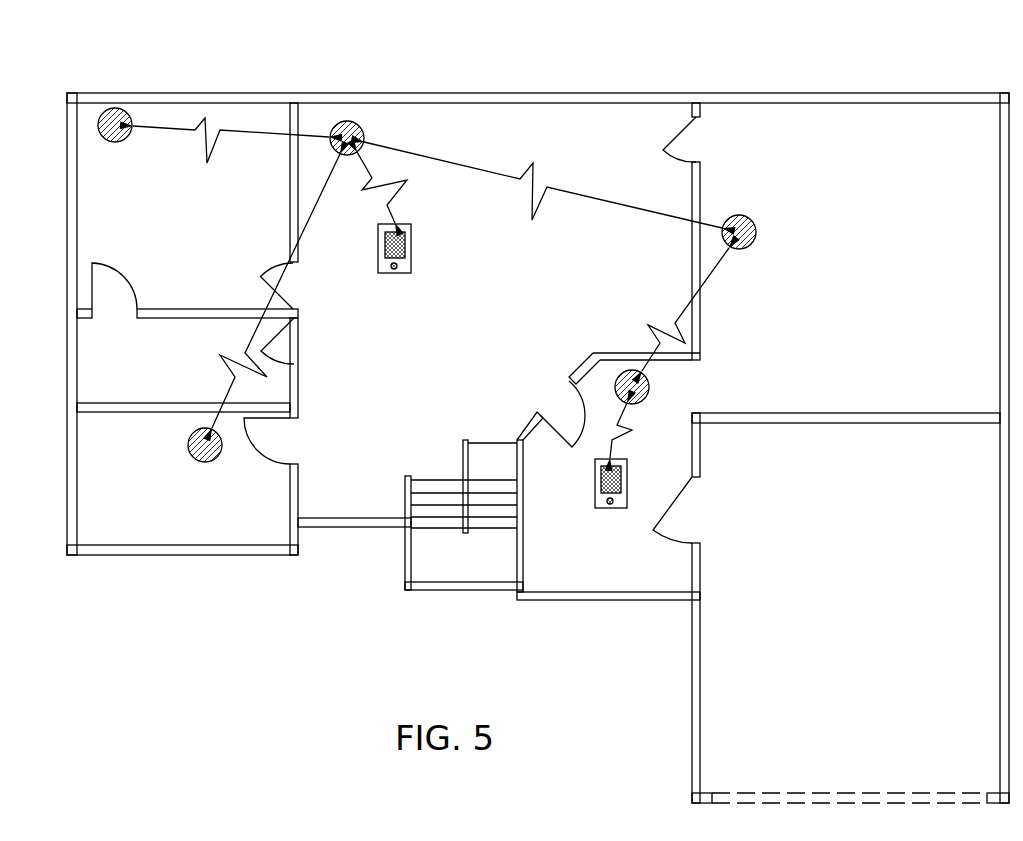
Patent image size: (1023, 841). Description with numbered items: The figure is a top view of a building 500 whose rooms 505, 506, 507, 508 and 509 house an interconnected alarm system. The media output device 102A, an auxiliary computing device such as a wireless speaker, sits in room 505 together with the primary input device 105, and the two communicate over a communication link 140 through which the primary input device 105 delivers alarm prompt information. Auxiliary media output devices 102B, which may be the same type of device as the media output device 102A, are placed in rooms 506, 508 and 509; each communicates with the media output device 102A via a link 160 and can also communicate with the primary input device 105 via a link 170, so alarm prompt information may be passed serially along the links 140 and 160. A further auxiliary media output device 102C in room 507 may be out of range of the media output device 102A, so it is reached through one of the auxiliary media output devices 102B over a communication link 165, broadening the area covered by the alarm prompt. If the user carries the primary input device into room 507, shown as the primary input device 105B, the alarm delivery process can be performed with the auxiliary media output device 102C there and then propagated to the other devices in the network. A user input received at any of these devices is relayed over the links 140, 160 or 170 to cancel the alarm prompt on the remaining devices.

The building 500 is at (323, 606).
The room 505 is at (422, 364).
The room 506 is at (835, 348).
The room 507 is at (625, 571).
The room 508 is at (263, 518).
The room 509 is at (228, 258).
The media output device 102A is at (357, 120).
The auxiliary media output device 102B is at (117, 143).
The auxiliary media output device 102C is at (650, 381).
The primary input device 105 is at (413, 232).
The primary input device 105B is at (595, 475).
The communication link 140 is at (404, 193).
The link 160 is at (167, 128).
The communication link 165 is at (703, 293).
The link 170 is at (625, 445).